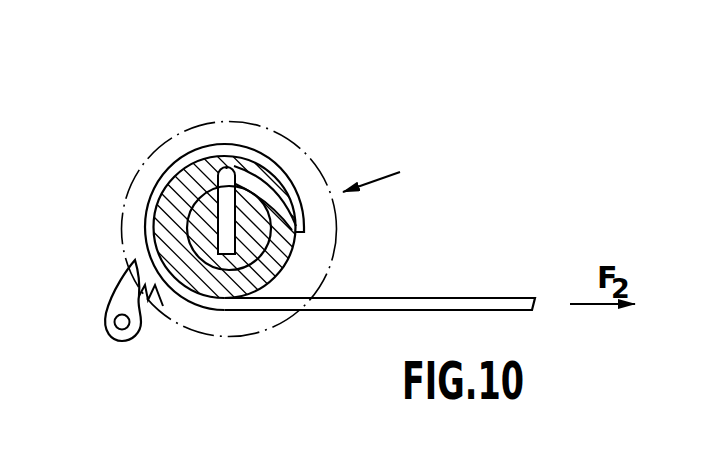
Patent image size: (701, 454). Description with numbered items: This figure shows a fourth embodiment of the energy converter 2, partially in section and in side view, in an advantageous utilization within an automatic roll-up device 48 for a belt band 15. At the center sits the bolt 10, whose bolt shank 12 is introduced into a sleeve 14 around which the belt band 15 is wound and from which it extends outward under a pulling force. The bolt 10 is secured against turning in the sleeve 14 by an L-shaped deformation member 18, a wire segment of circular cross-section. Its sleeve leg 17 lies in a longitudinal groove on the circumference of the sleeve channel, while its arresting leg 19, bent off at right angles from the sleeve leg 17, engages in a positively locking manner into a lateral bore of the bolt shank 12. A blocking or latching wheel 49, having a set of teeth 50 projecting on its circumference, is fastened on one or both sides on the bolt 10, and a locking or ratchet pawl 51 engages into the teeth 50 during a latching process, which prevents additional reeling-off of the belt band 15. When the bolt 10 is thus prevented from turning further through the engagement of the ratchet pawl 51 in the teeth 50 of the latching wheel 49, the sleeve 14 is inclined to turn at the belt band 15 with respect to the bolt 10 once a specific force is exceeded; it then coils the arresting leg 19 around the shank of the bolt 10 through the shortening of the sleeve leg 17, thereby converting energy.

The energy converter 2 is at (261, 150).
The bolt 10 is at (200, 219).
The bolt shank 12 is at (298, 251).
The sleeve 14 is at (276, 178).
The belt band 15 is at (477, 295).
The sleeve leg 17 is at (216, 177).
The deformation member 18 is at (230, 165).
The arresting leg 19 is at (231, 197).
The automatic roll-up device 48 is at (386, 172).
The latching wheel 49 is at (183, 128).
The set of teeth 50 is at (155, 310).
The ratchet pawl 51 is at (112, 293).